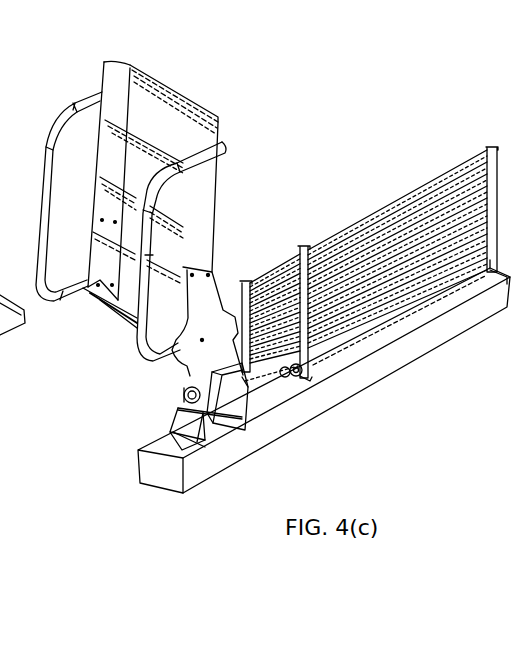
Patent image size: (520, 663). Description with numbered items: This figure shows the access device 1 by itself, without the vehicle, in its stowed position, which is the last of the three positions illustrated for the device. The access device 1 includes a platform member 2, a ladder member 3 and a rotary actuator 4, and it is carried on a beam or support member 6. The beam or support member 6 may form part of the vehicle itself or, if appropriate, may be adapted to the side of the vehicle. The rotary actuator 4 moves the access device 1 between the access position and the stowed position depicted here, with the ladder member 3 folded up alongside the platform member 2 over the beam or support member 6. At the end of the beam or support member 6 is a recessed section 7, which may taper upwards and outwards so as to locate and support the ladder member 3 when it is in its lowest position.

The access device 1 is at (335, 143).
The platform member 2 is at (367, 263).
The ladder member 3 is at (197, 200).
The rotary actuator 4 is at (235, 400).
The beam or support member 6 is at (388, 367).
The recessed section 7 is at (208, 452).